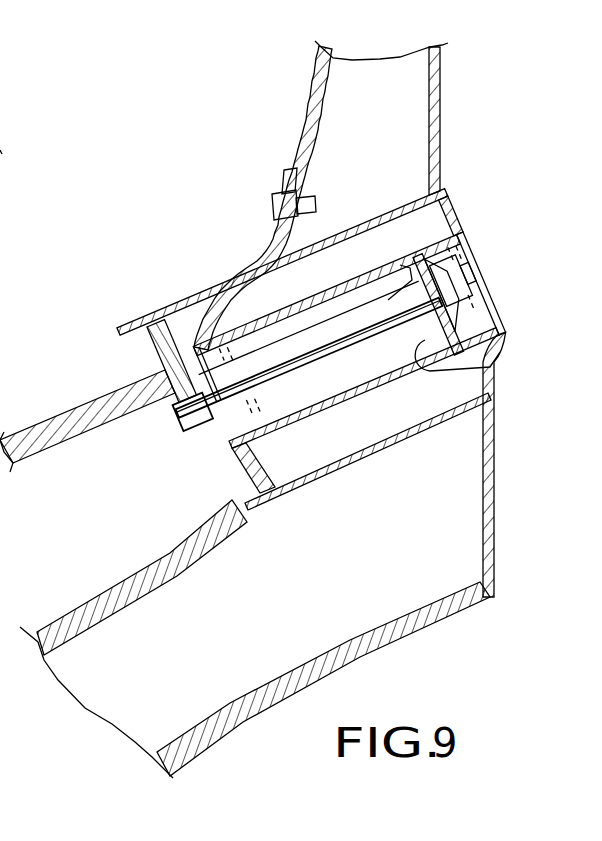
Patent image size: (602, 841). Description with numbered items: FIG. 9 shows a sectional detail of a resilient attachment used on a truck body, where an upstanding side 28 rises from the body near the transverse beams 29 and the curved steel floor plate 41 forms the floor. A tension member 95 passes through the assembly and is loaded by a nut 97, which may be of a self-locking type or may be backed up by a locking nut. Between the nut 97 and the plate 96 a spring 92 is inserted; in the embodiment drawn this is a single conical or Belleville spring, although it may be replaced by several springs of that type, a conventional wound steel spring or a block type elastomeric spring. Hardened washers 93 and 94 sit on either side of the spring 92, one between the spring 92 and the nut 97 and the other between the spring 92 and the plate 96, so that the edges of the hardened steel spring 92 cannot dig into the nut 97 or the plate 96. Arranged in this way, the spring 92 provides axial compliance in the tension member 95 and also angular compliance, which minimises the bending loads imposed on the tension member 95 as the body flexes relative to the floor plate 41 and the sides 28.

The upstanding sides 28 is at (437, 121).
The transverse beams 29 is at (402, 628).
The curved steel floor plate 41 is at (73, 418).
The spring 92 is at (500, 318).
The hardened washer 93 is at (452, 300).
The hardened washer 94 is at (443, 367).
The tension member 95 is at (336, 348).
The plate 96 is at (388, 298).
The nut 97 is at (475, 262).